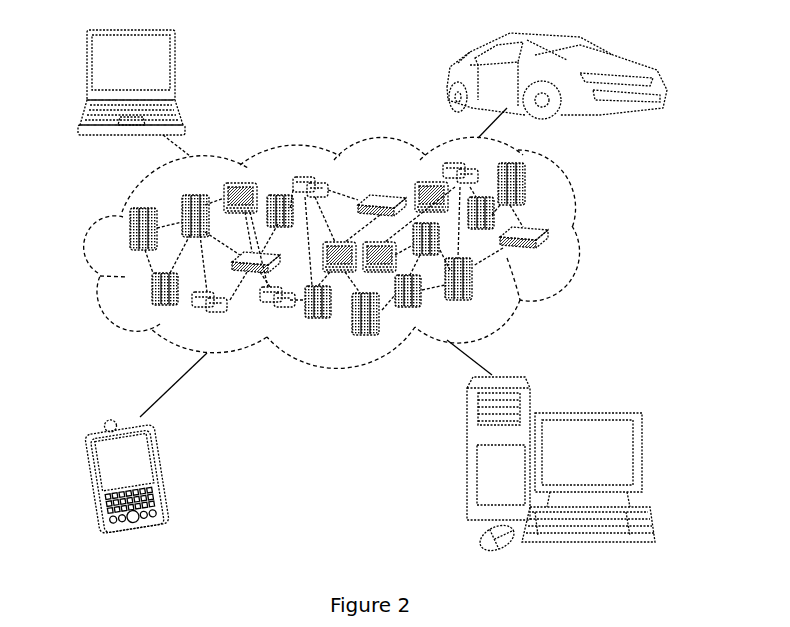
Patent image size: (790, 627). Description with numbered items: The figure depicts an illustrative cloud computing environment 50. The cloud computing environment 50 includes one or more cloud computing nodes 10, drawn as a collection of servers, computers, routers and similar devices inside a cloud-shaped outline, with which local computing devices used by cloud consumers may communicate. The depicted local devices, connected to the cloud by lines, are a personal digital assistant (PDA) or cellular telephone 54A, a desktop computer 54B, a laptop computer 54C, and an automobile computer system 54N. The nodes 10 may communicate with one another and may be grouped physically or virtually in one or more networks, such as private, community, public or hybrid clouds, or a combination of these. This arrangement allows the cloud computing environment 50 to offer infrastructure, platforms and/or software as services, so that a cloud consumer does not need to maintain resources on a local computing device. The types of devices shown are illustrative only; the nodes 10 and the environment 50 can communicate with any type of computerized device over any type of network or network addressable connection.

The cloud computing nodes 10 is at (354, 252).
The cloud computing environment 50 is at (587, 237).
The personal digital assistant (PDA) or cellular telephone 54A is at (167, 470).
The desktop computer 54B is at (585, 412).
The laptop computer 54C is at (177, 68).
The automobile computer system 54N is at (450, 78).